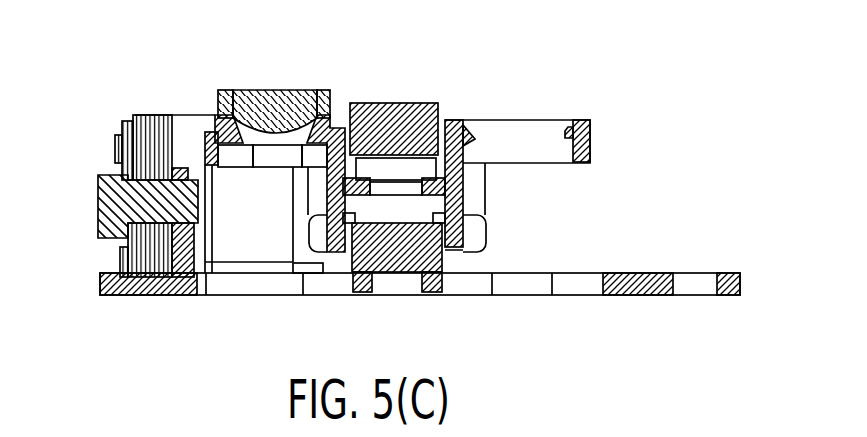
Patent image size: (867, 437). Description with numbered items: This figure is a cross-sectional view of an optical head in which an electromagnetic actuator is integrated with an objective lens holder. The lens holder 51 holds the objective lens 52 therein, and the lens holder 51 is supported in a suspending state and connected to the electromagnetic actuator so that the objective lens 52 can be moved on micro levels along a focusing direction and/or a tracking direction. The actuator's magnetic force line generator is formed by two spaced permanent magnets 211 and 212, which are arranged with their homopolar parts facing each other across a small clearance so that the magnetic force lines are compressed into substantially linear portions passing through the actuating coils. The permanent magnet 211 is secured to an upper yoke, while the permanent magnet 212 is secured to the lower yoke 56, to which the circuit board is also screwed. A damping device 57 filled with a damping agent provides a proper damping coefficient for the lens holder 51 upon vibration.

The lens holder 51 is at (217, 133).
The objective lens 52 is at (267, 92).
The lower yoke 56 is at (140, 293).
The damping device 57 is at (143, 157).
The permanent magnet 211 is at (403, 113).
The permanent magnet 212 is at (398, 253).